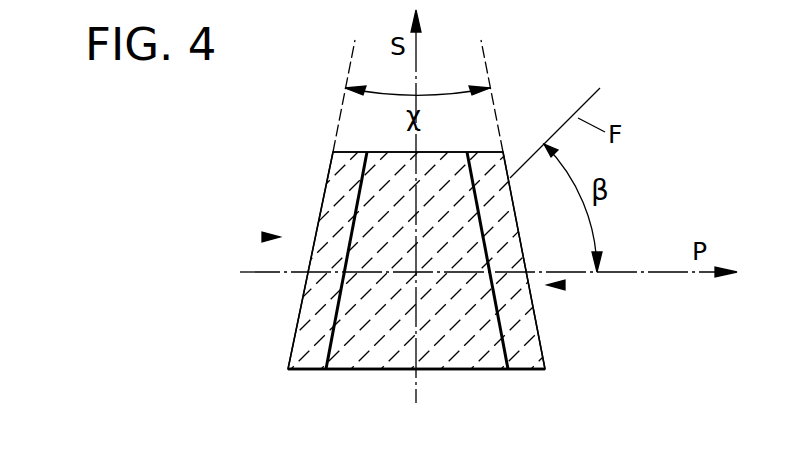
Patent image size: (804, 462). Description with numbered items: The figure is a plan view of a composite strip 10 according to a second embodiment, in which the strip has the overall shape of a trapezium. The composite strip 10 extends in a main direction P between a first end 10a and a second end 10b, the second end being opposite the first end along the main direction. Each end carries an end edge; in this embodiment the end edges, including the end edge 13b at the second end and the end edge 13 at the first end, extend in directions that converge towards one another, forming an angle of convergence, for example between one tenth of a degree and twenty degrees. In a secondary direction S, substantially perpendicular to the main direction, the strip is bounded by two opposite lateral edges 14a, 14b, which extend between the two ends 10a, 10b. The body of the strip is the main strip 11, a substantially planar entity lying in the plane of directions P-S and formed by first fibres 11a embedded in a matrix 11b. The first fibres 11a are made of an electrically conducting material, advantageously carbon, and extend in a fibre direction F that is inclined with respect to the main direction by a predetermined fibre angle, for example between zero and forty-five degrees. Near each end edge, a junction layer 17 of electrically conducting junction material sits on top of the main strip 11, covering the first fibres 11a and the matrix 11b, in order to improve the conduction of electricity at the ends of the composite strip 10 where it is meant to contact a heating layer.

The composite strip 10 is at (192, 165).
The first end 10a is at (266, 237).
The second end 10b is at (562, 285).
The main strip 11 is at (443, 173).
The first fibres 11a is at (375, 370).
The matrix 11b is at (328, 223).
The outer side face 13 is at (293, 345).
The end edge 13b is at (540, 345).
The lateral edge 14a is at (477, 370).
The lateral edge 14b is at (373, 152).
The junction layer 17 is at (311, 356).